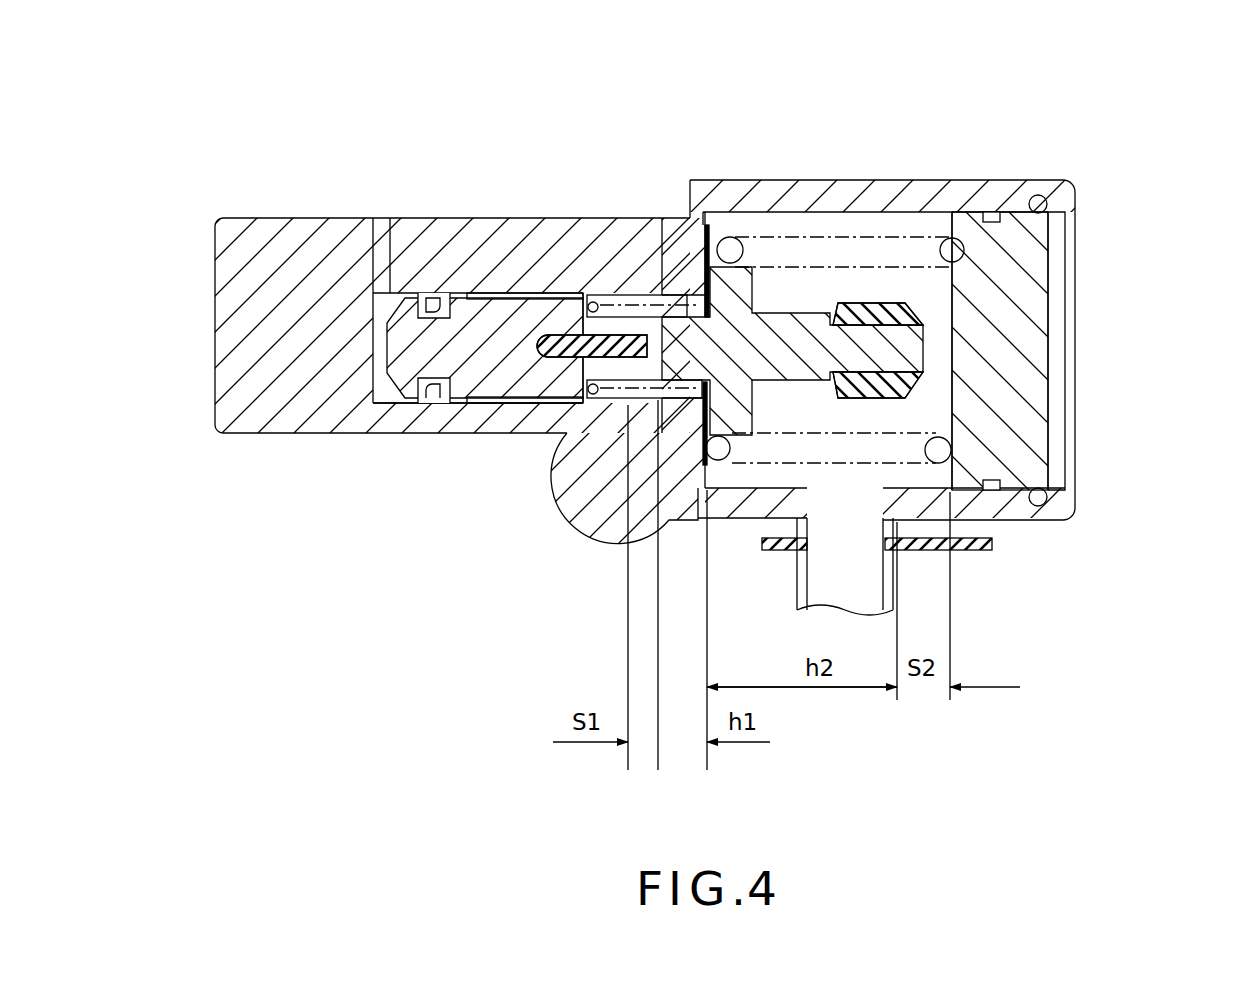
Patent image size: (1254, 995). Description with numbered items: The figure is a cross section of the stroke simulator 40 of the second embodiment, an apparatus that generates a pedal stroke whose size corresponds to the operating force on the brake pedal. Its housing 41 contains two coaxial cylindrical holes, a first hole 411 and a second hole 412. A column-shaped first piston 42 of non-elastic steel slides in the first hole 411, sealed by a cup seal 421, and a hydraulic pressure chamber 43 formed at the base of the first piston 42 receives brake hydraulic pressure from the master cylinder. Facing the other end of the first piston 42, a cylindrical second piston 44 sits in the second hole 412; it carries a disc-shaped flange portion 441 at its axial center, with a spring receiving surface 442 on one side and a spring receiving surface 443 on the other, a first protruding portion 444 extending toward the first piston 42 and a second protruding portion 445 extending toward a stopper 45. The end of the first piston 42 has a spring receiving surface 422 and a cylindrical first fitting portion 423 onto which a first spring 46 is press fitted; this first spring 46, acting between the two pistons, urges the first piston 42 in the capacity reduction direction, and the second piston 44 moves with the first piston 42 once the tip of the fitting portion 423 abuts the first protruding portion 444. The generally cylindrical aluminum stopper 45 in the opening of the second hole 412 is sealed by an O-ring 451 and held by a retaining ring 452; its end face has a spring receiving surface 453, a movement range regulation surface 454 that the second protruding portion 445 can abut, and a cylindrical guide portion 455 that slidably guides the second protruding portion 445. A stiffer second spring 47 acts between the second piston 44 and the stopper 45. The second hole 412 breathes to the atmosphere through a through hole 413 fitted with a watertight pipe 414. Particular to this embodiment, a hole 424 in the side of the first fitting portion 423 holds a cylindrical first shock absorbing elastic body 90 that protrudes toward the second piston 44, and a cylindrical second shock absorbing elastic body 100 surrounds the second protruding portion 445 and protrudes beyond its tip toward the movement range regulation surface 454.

The stroke simulator 40 is at (238, 198).
The housing 41 is at (240, 301).
The first hole 411 is at (372, 395).
The second hole 412 is at (912, 205).
The through hole 413 is at (827, 498).
The watertight pipe 414 is at (797, 560).
The first piston 42 is at (410, 300).
The cup seal 421 is at (440, 396).
The spring receiving surface 422 is at (545, 300).
The first fitting portion 423 is at (578, 300).
The hole 424 is at (470, 292).
The hydraulic pressure chamber 43 is at (380, 352).
The second piston 44 is at (655, 236).
The flange portion 441 is at (712, 225).
The spring receiving surface 442 is at (682, 235).
The spring receiving surface 443 is at (730, 237).
The first protruding portion 444 is at (600, 300).
The second protruding portion 445 is at (840, 300).
The stopper 45 is at (1020, 268).
The O-ring 451 is at (1000, 205).
The retaining ring 452 is at (1040, 186).
The spring receiving surface 453 is at (988, 212).
The movement range regulation surface 454 is at (955, 368).
The guide portion 455 is at (1000, 288).
The first spring 46 is at (582, 512).
The second spring 47 is at (940, 455).
The first shock absorbing elastic body 90 is at (396, 292).
The second shock absorbing elastic body 100 is at (863, 240).